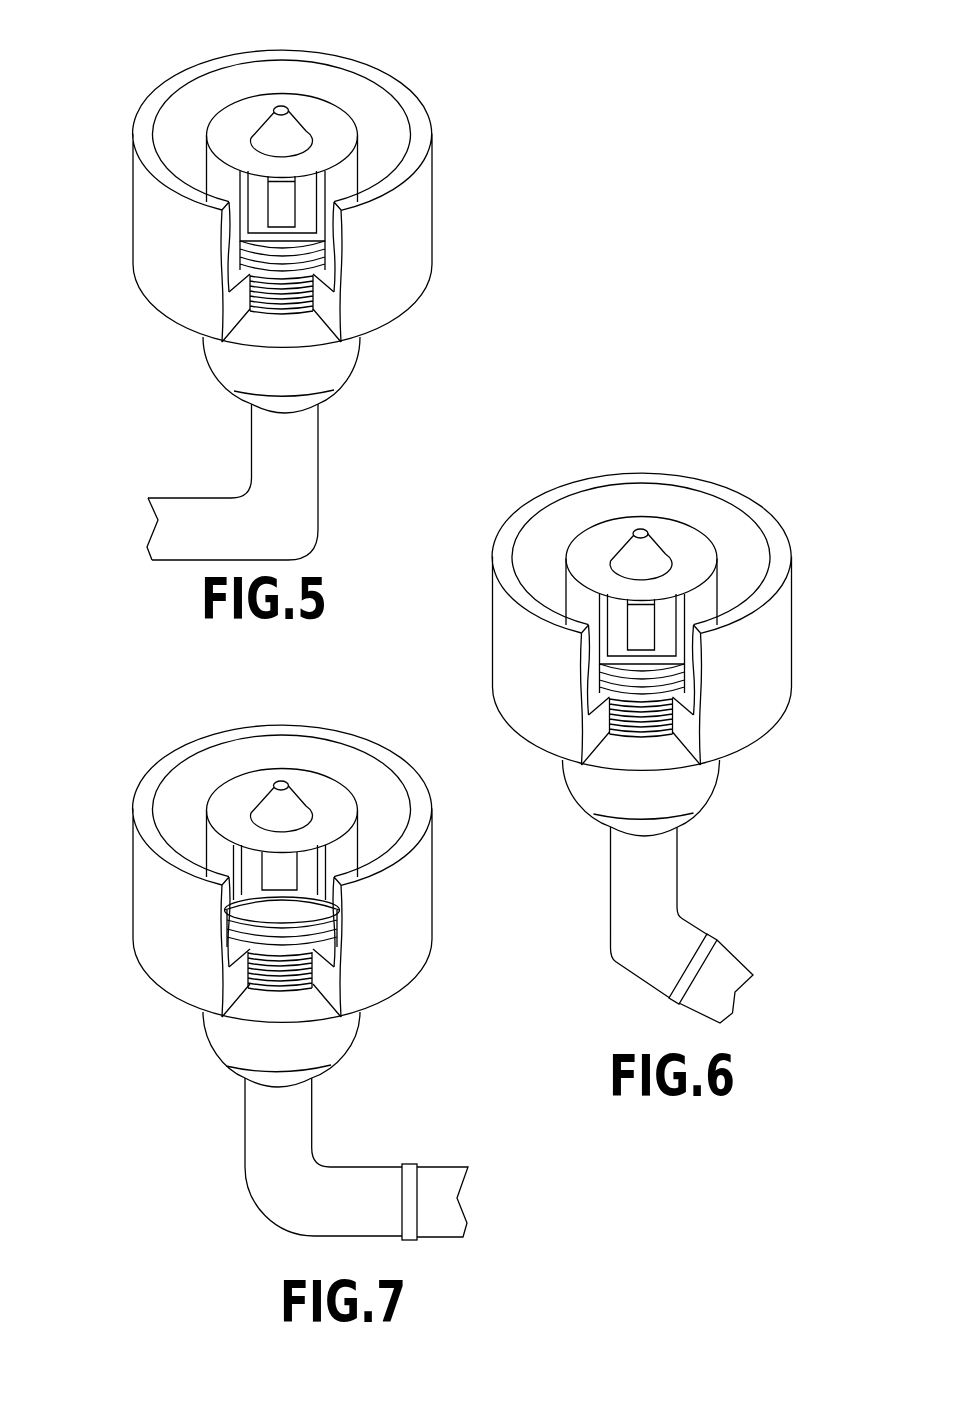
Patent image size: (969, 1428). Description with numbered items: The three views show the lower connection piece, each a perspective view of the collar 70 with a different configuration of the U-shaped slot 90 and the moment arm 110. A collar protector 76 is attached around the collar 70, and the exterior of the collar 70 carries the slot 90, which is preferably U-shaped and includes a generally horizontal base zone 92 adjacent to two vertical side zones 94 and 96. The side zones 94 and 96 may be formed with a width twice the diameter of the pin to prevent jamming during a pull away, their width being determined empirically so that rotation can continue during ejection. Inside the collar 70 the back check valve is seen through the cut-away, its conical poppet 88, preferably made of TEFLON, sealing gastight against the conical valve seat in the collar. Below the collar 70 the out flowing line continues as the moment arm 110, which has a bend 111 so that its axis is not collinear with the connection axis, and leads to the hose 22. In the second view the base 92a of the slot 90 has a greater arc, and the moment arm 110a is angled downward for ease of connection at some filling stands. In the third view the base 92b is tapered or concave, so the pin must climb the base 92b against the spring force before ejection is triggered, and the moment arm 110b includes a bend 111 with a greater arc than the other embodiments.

In FIG. 5, the collar 70 is at (247, 112).
In FIG. 6, the collar 70 is at (592, 540).
In FIG. 7, the collar 70 is at (240, 793).
In FIG. 5, the conical poppet 88 is at (297, 127).
In FIG. 6, the conical poppet 88 is at (650, 550).
In FIG. 7, the conical poppet 88 is at (290, 805).
In FIG. 5, the slot 90 is at (308, 170).
In FIG. 6, the slot 90 is at (667, 595).
In FIG. 7, the slot 90 is at (310, 843).
In FIG. 5, the base zone 92 is at (266, 232).
In FIG. 6, the base 92a is at (622, 658).
In FIG. 7, the base 92b is at (253, 893).
In FIG. 5, the side zone 94 is at (252, 203).
In FIG. 6, the side zone 94 is at (597, 646).
In FIG. 7, the side zone 94 is at (248, 878).
In FIG. 5, the side zone 96 is at (313, 213).
In FIG. 6, the side zone 96 is at (673, 618).
In FIG. 7, the side zone 96 is at (308, 884).
In FIG. 5, the collar protector 76 is at (420, 245).
In FIG. 6, the collar protector 76 is at (778, 652).
In FIG. 7, the collar protector 76 is at (420, 920).
In FIG. 5, the moment arm 110 is at (188, 518).
In FIG. 6, the moment arm 110a is at (653, 895).
In FIG. 7, the moment arm 110b is at (381, 1187).
In FIG. 7, the bend 111 is at (293, 1182).
In FIG. 6, the hose 22 is at (725, 975).
In FIG. 7, the hose 22 is at (439, 1197).